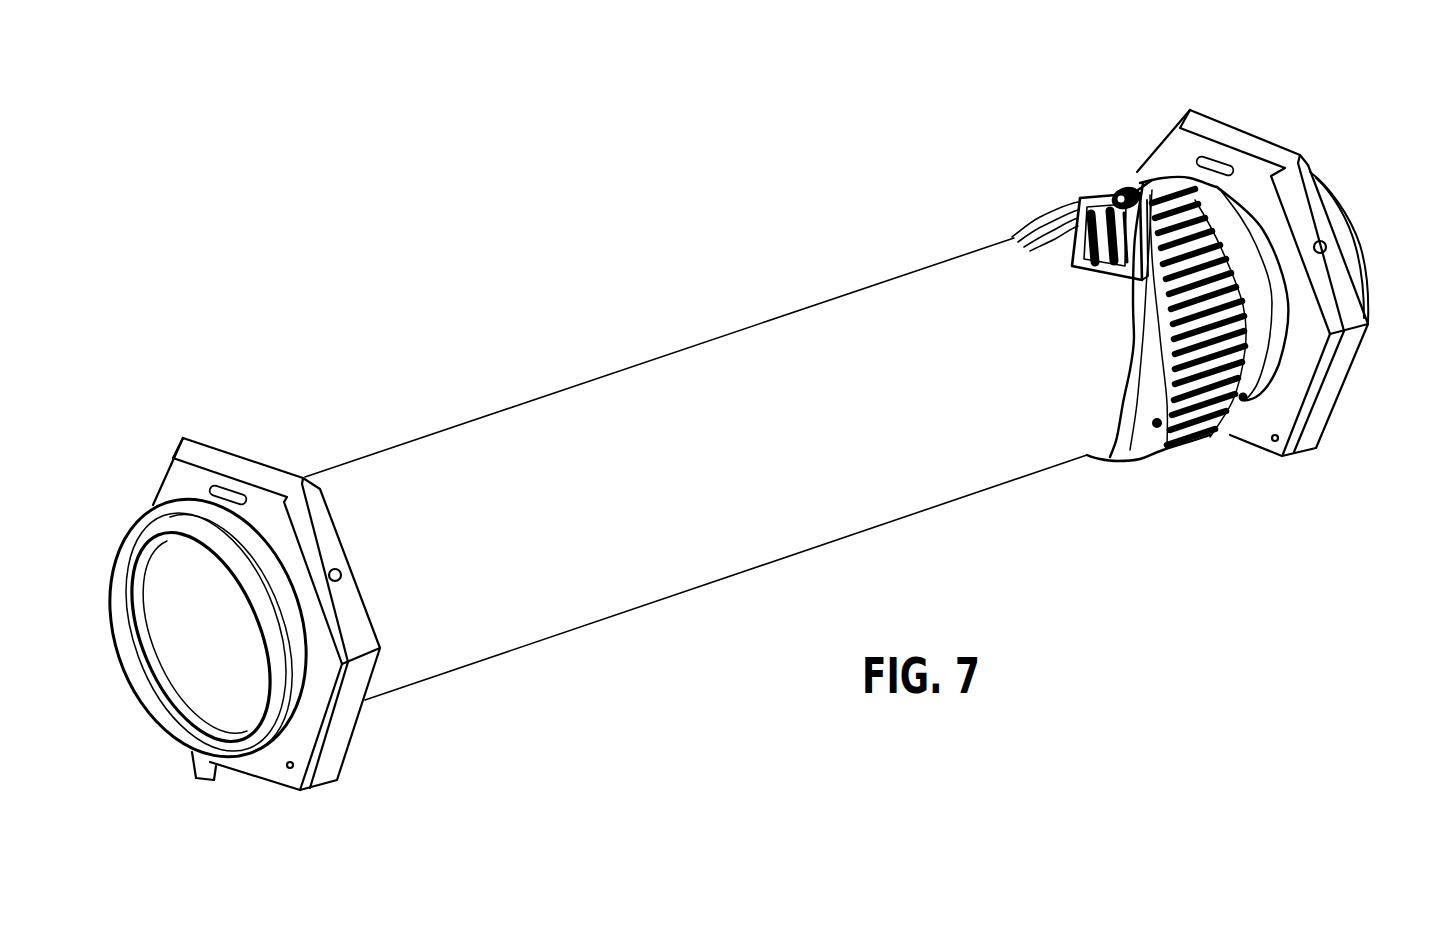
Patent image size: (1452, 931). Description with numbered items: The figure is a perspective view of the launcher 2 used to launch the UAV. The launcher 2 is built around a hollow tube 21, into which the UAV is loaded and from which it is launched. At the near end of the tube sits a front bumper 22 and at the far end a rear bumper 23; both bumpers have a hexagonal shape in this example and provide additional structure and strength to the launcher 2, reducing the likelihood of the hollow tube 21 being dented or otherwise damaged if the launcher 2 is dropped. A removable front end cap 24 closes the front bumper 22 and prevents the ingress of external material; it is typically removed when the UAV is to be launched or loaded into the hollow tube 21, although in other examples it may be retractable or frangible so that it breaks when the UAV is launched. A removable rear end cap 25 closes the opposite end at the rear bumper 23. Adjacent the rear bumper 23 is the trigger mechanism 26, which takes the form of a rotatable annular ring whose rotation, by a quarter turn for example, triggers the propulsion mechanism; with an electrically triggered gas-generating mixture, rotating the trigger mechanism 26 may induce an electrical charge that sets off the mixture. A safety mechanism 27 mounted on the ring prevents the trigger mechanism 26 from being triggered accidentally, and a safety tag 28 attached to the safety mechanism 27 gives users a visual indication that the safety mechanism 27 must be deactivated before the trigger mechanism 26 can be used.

The launcher 2 is at (223, 132).
The hollow tube 21 is at (649, 388).
The front bumper 22 is at (218, 452).
The rear bumper 23 is at (1240, 142).
The removable front end cap 24 is at (157, 707).
The removable rear end cap 25 is at (1333, 215).
The trigger mechanism 26 is at (1182, 445).
The safety mechanism 27 is at (1118, 190).
The safety tag 28 is at (1087, 253).